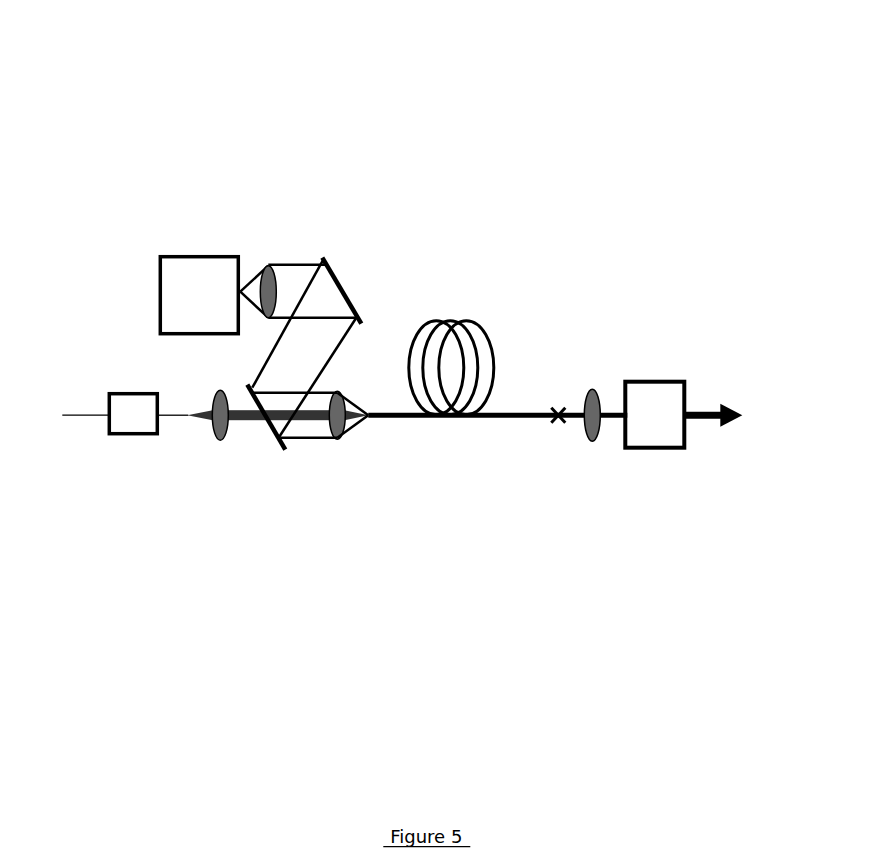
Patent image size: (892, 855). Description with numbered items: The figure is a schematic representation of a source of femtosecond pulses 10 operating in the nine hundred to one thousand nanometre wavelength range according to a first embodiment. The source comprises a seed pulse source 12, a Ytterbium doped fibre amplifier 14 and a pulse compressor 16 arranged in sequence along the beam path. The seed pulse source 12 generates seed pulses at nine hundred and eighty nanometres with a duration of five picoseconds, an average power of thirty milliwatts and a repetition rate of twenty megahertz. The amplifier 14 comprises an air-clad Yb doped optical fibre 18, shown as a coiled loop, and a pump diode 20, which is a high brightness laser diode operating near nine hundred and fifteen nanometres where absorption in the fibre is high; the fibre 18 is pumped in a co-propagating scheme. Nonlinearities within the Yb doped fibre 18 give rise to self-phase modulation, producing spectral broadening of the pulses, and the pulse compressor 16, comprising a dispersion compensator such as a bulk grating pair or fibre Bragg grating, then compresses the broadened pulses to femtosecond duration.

The source of femtosecond pulses 10 is at (472, 125).
The seed pulse source 12 is at (118, 435).
The Ytterbium doped fibre amplifier 14 is at (416, 483).
The pulse compressor 16 is at (662, 418).
The Yb doped optical fibre 18 is at (517, 408).
The pump diode 20 is at (148, 287).